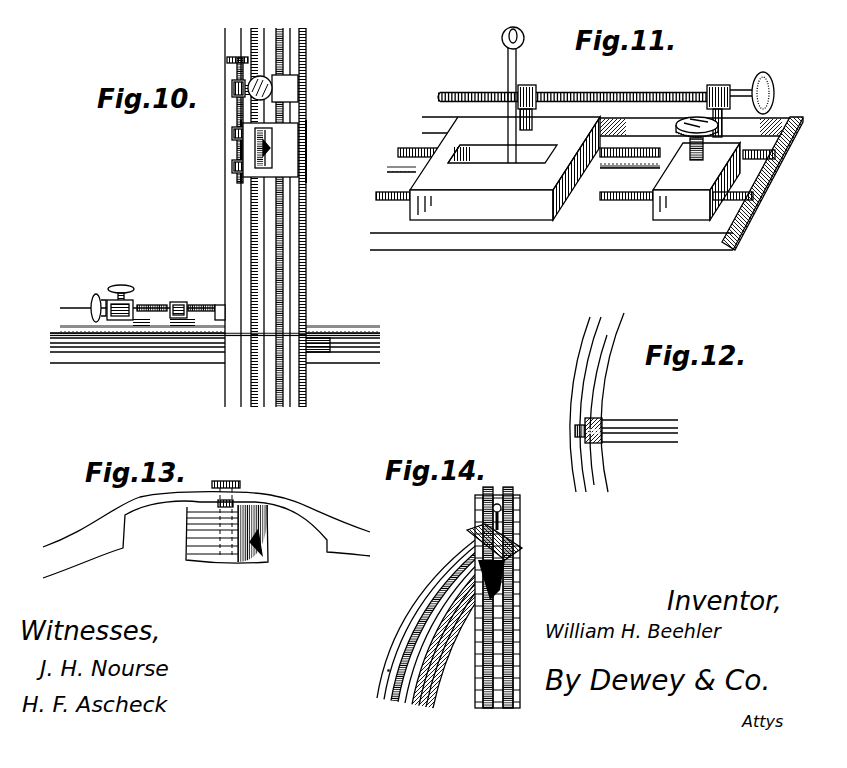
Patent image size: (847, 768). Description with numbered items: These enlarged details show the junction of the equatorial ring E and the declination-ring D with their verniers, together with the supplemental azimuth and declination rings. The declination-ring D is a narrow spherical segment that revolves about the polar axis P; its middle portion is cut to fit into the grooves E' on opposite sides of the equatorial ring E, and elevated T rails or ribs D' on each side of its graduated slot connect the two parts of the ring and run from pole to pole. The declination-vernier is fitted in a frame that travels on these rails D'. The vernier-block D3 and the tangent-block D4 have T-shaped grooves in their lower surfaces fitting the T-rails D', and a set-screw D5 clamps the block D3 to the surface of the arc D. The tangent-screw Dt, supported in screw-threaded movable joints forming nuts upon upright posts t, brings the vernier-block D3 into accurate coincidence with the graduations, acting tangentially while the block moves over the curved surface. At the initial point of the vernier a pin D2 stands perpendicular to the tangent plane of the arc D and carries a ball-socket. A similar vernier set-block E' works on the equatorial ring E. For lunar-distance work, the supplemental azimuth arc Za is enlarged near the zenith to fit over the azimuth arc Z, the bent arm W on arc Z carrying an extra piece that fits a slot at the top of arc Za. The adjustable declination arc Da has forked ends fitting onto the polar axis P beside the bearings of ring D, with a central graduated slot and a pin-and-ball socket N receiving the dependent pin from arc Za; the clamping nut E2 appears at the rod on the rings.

In FIG. 10, the declination-ring D is at (256, 217).
In FIG. 11, the declination-ring D is at (586, 194).
In FIG. 12, the declination-ring D is at (607, 402).
In FIG. 14, the declination-ring D is at (507, 601).
In FIG. 10, the T rails or ribs D' is at (284, 180).
In FIG. 11, the T rails or ribs D' is at (762, 183).
In FIG. 12, the T rails or ribs D' is at (576, 404).
In FIG. 14, the T rails or ribs D' is at (445, 585).
In FIG. 10, the pin D2 is at (270, 145).
In FIG. 11, the pin D2 is at (516, 68).
In FIG. 10, the vernier-block D3 is at (285, 170).
In FIG. 11, the vernier-block D3 is at (505, 168).
In FIG. 10, the tangent-block D4 is at (285, 87).
In FIG. 11, the tangent-block D4 is at (696, 181).
In FIG. 10, the set-screw D5 is at (268, 80).
In FIG. 11, the set-screw D5 is at (686, 124).
In FIG. 10, the tangent-screw Dt is at (237, 112).
In FIG. 11, the tangent-screw Dt is at (585, 94).
In FIG. 14, the adjustable declination arc Da is at (406, 641).
In FIG. 10, the upright posts t is at (233, 88).
In FIG. 11, the upright posts t is at (530, 92).
In FIG. 10, the equatorial ring E is at (215, 326).
In FIG. 12, the equatorial ring E is at (640, 421).
In FIG. 10, the grooves / vernier set-block E' is at (142, 304).
In FIG. 12, the clamping nut E2 is at (606, 418).
In FIG. 13, the azimuth arc Z is at (196, 535).
In FIG. 13, the supplemental azimuth arc Za is at (90, 541).
In FIG. 13, the bent arm W is at (233, 503).
In FIG. 14, the polar axis P is at (478, 515).
In FIG. 14, the pin-and-ball socket N is at (519, 542).